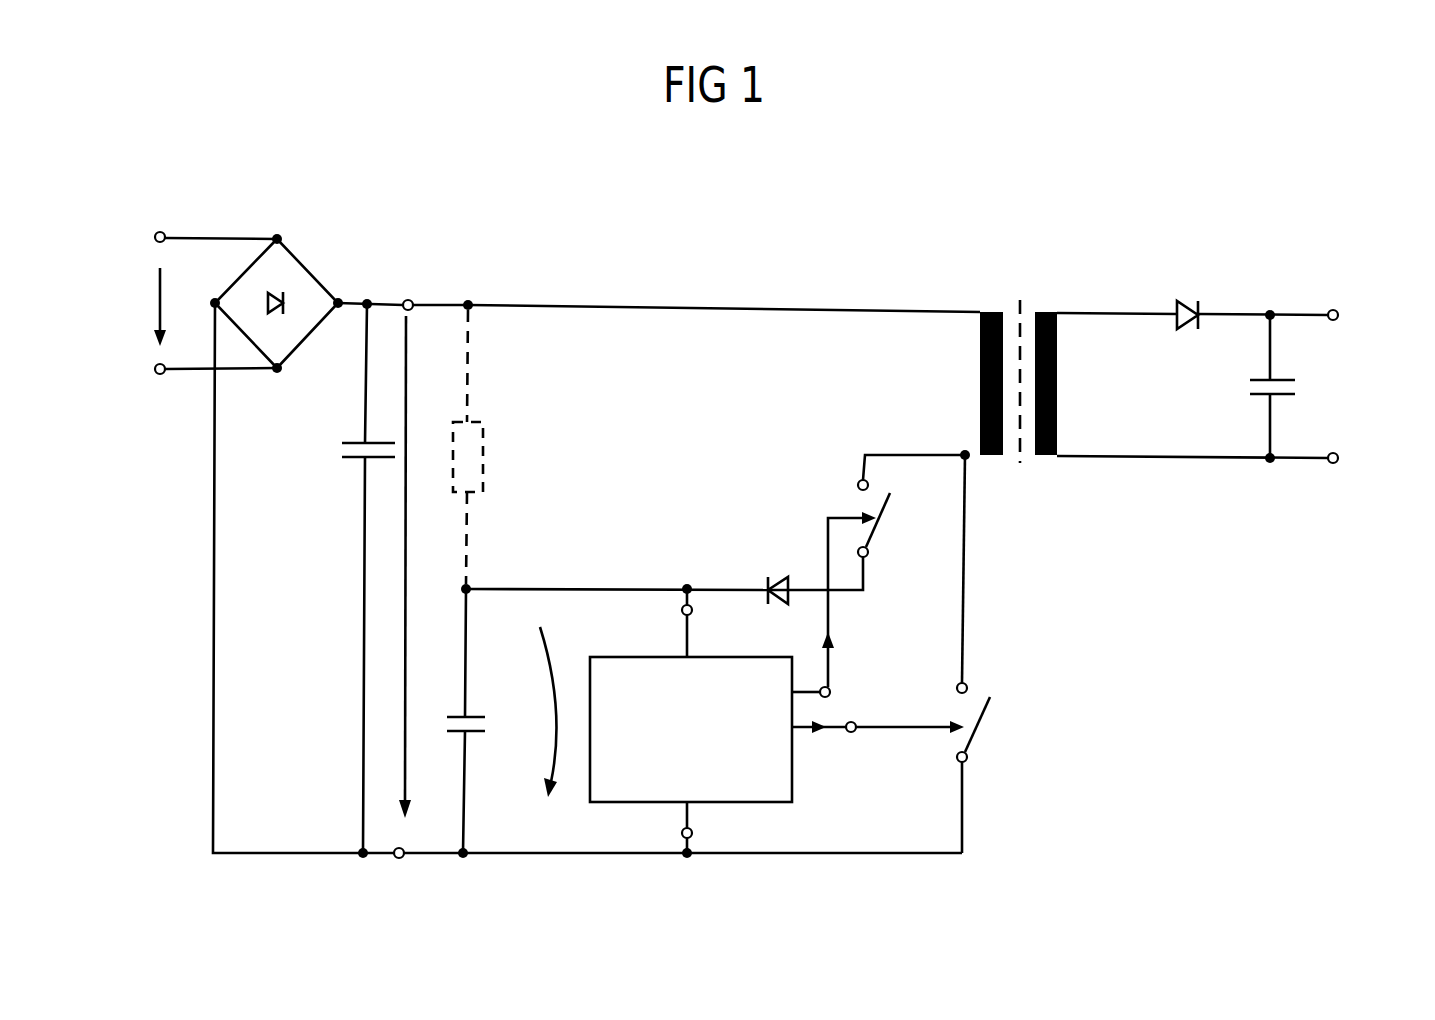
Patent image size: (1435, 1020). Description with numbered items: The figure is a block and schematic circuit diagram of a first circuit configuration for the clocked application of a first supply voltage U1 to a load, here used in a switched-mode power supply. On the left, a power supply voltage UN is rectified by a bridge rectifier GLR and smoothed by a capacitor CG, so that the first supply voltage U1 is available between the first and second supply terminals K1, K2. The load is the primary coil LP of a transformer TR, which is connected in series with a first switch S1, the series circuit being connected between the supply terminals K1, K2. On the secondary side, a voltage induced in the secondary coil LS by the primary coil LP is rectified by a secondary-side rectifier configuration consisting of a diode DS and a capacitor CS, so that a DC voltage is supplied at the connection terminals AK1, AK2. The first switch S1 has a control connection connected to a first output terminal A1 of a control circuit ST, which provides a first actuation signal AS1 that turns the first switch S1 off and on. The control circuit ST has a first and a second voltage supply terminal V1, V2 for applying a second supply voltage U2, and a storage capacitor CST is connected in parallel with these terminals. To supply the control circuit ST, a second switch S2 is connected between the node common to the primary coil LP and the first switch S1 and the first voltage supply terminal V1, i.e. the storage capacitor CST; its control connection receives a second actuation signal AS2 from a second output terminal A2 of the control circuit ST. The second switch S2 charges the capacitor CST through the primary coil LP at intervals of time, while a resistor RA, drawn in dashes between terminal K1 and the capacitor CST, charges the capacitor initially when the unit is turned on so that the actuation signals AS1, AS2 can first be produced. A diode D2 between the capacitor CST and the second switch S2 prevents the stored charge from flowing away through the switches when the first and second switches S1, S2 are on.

The bridge rectifier GLR is at (249, 284).
The power supply voltage UN is at (136, 307).
The first supply terminal K1 is at (417, 284).
The second supply terminal K2 is at (413, 872).
The capacitor CG is at (346, 578).
The first supply voltage U1 is at (426, 567).
The resistor RA is at (491, 452).
The storage capacitor CST is at (492, 721).
The second supply voltage U2 is at (565, 705).
The control circuit ST is at (691, 729).
The first voltage supply terminal V1 is at (617, 620).
The second voltage supply terminal V2 is at (712, 830).
The diode D2 is at (810, 571).
The second switch S2 is at (914, 503).
The second actuation signal AS2 is at (858, 599).
The second output terminal A2 is at (835, 692).
The first actuation signal AS1 is at (824, 744).
The first output terminal A1 is at (905, 744).
The first switch S1 is at (994, 717).
The transformer TR is at (1022, 364).
The primary coil LP is at (965, 383).
The secondary coil LS is at (1071, 383).
The secondary-side rectifier diode DS is at (1184, 339).
The secondary-side rectifier capacitor CS is at (1287, 386).
The connection terminal AK1 is at (1369, 319).
The connection terminal AK2 is at (1374, 462).